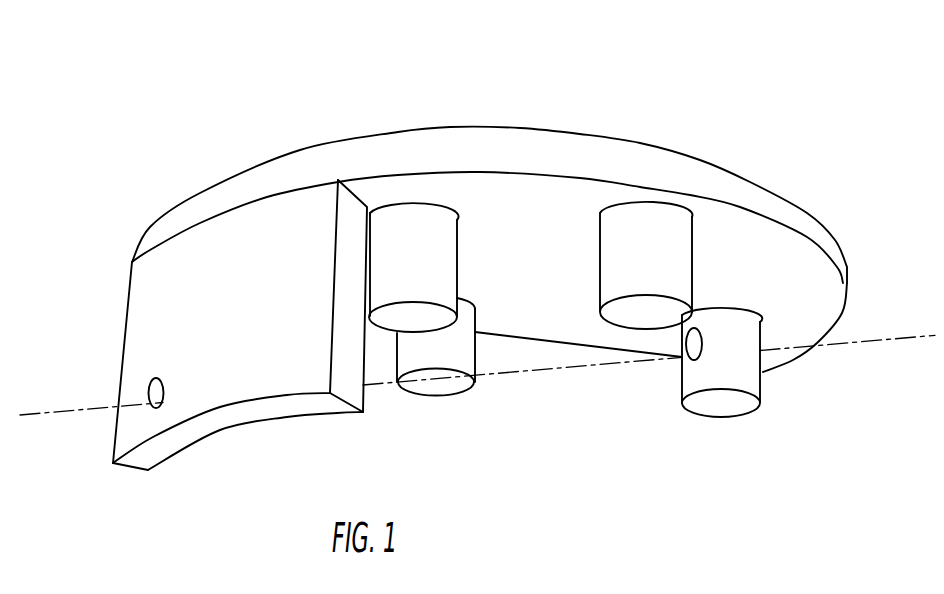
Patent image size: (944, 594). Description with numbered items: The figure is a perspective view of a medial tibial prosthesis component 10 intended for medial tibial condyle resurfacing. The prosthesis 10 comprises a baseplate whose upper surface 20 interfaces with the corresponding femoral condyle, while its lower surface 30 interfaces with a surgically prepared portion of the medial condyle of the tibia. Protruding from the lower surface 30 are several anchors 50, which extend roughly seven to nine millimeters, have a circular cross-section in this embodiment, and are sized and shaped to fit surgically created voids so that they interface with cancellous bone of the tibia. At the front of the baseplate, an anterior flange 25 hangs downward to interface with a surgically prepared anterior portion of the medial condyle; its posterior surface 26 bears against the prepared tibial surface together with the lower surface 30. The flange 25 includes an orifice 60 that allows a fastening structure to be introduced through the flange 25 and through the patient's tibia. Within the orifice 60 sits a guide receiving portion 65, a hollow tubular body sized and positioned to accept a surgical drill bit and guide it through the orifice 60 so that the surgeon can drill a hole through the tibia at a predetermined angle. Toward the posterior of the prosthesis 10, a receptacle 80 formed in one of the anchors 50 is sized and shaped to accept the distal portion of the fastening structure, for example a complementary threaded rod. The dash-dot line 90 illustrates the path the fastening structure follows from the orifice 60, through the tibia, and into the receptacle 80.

The medial tibial prosthesis component 10 is at (234, 124).
The upper surface 20 is at (489, 217).
The anterior flange 25 is at (222, 397).
The posterior surface 26 is at (264, 422).
The lower surface 30 is at (517, 327).
The anchor 50 is at (649, 206).
The orifice 60 is at (125, 362).
The guide receiving portion 65 is at (148, 391).
The receptacle 80 is at (688, 348).
The line 90 is at (601, 366).